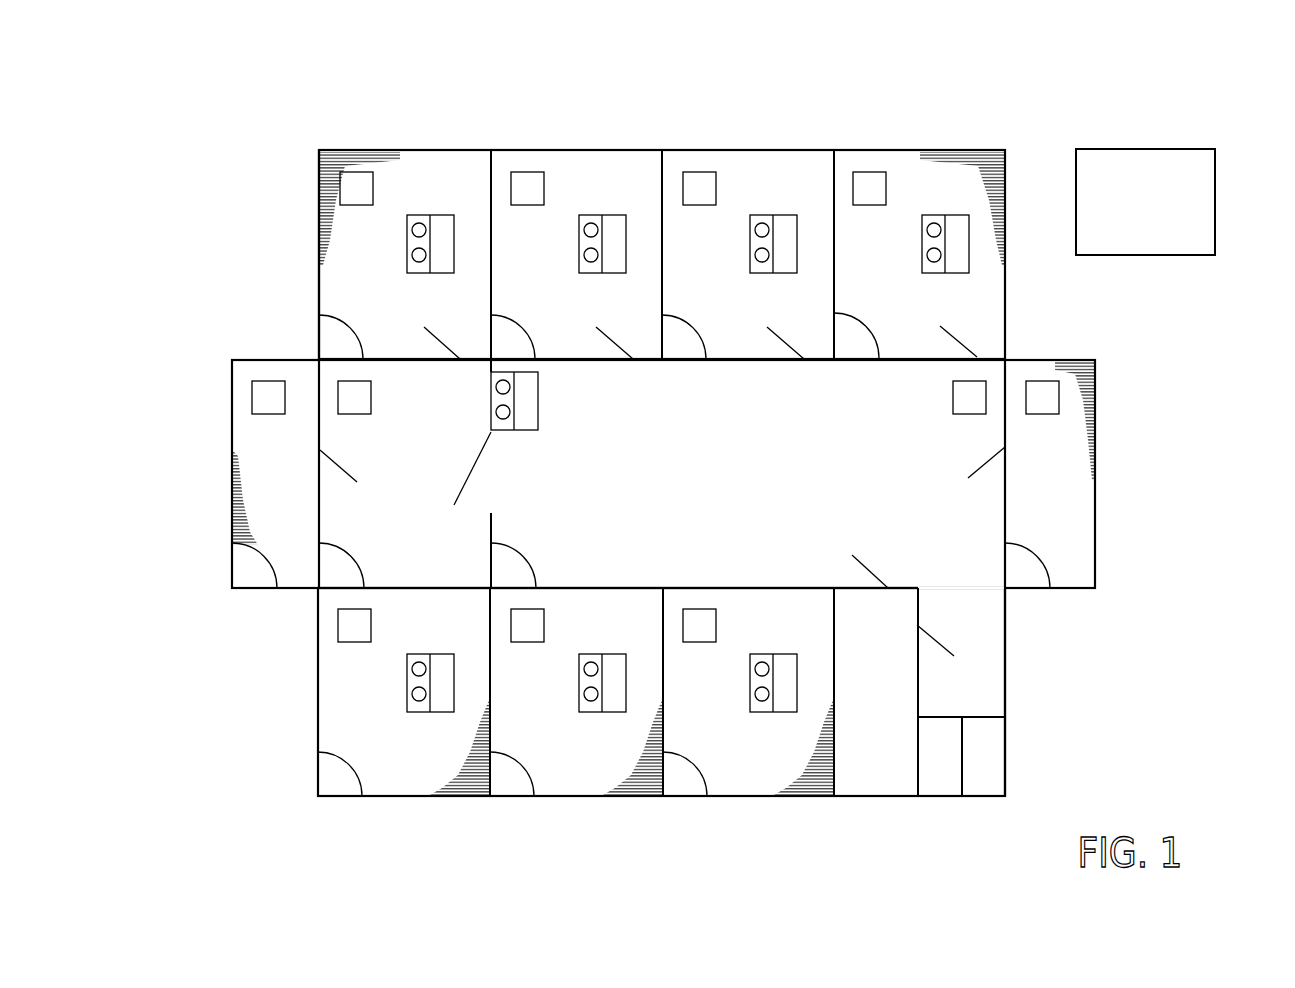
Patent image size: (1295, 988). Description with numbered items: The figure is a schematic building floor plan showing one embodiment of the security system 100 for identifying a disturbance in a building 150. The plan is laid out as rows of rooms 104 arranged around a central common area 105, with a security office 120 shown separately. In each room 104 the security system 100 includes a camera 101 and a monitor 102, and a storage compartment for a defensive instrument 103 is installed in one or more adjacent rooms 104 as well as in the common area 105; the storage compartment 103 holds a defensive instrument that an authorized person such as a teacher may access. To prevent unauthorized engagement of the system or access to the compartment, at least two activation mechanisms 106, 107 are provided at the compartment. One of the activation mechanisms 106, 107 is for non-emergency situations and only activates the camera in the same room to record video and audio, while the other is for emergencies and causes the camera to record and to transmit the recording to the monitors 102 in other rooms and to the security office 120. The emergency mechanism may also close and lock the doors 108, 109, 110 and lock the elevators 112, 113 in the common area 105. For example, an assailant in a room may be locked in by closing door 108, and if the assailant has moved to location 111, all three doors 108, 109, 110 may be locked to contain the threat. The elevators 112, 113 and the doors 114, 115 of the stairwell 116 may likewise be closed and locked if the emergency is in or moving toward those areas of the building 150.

The security system 100 is at (685, 869).
The camera 101 is at (363, 170).
The monitor 102 is at (318, 335).
The storage compartment for a defensive instrument 103 is at (433, 215).
The room 104 is at (318, 207).
The common area 105 is at (232, 460).
The activation mechanism 106 is at (411, 232).
The activation mechanism 107 is at (411, 256).
The door 108 is at (440, 338).
The door 109 is at (472, 472).
The door 110 is at (340, 462).
The location 111 is at (369, 474).
The elevator 112 is at (937, 798).
The elevator 113 is at (983, 798).
The door of the stairwell 114 is at (864, 563).
The door of the stairwell 115 is at (932, 633).
The stairwell 116 is at (872, 798).
The security office 120 is at (927, 150).
The building 150 is at (1005, 690).